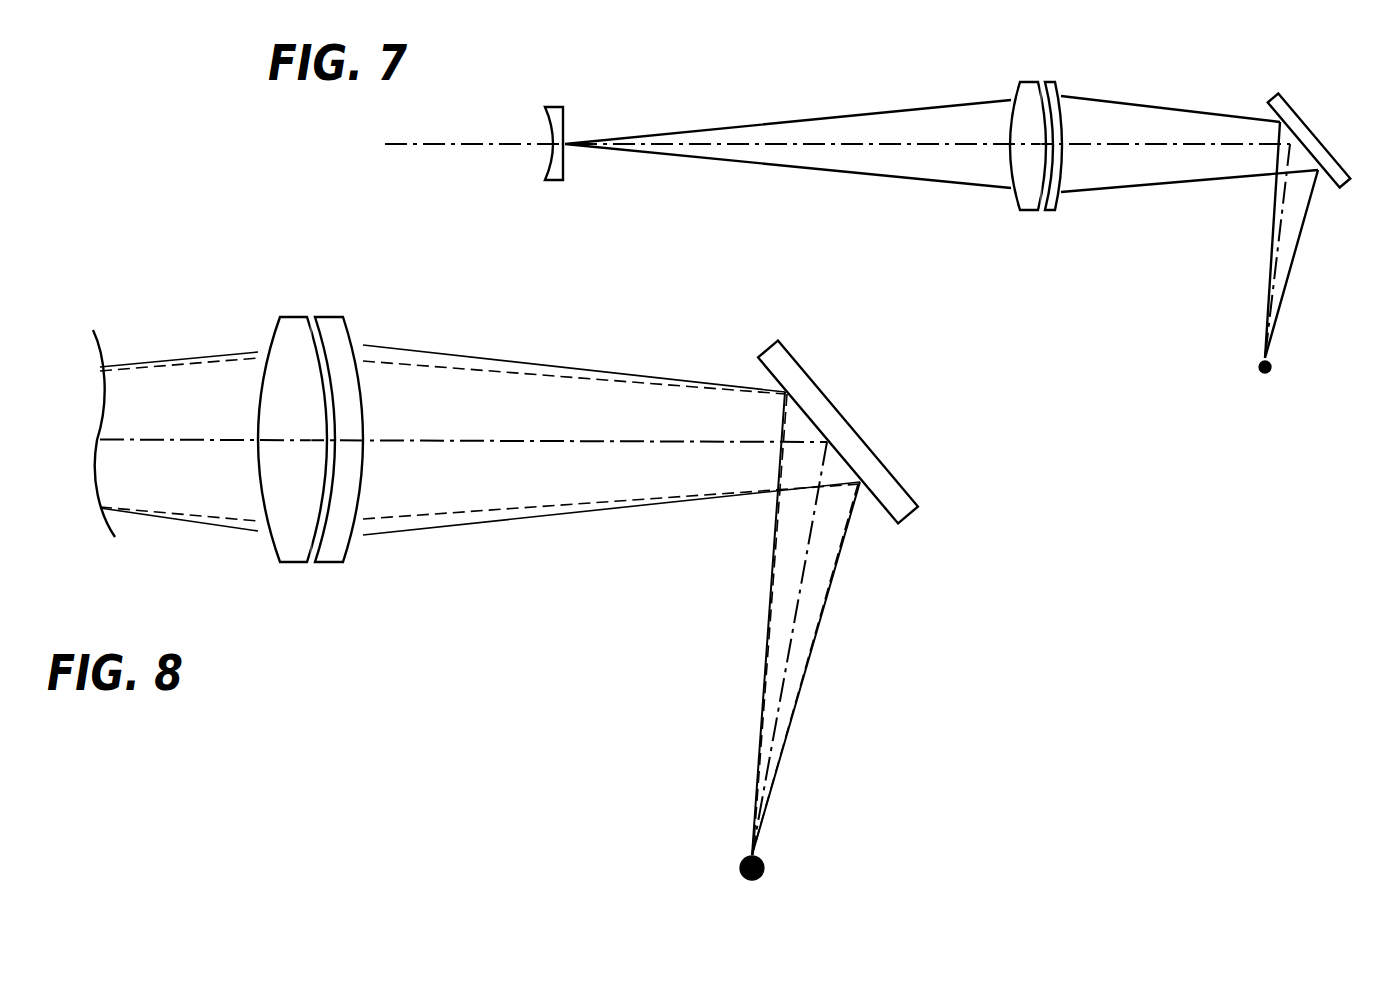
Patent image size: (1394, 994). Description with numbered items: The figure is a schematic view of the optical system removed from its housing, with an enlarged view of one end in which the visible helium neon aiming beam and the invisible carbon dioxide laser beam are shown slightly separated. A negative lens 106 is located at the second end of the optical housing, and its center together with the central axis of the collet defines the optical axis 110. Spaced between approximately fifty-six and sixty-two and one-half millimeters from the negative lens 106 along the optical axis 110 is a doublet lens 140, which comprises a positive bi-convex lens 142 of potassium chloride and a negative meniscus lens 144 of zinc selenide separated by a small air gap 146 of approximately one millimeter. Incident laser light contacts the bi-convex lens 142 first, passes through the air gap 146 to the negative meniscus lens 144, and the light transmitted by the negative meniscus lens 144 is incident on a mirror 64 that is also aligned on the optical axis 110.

In FIG. 7, the negative lens 106 is at (553, 107).
In FIG. 7, the optical axis 110 is at (782, 144).
In FIG. 8, the optical axis 110 is at (412, 440).
In FIG. 7, the doublet lens 140 is at (1061, 160).
In FIG. 8, the doublet lens 140 is at (347, 448).
In FIG. 7, the positive bi-convex lens 142 is at (1018, 197).
In FIG. 8, the positive bi-convex lens 142 is at (273, 551).
In FIG. 7, the negative meniscus lens 144 is at (1053, 212).
In FIG. 8, the negative meniscus lens 144 is at (348, 549).
In FIG. 7, the air gap 146 is at (1041, 212).
In FIG. 8, the air gap 146 is at (310, 561).
In FIG. 7, the mirror 64 is at (1303, 118).
In FIG. 8, the mirror 64 is at (858, 466).